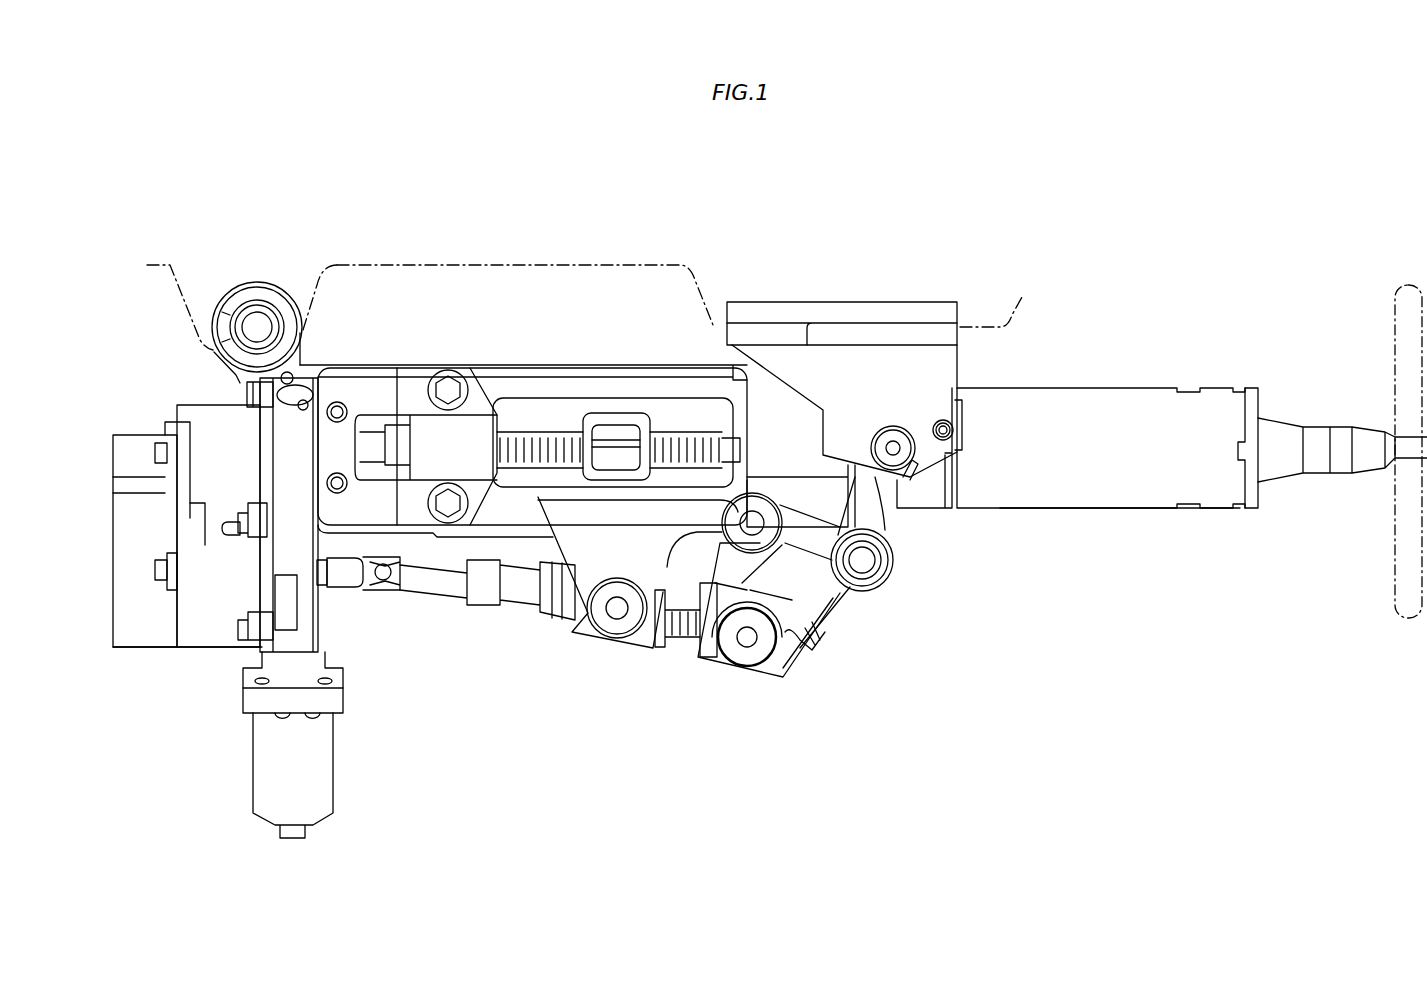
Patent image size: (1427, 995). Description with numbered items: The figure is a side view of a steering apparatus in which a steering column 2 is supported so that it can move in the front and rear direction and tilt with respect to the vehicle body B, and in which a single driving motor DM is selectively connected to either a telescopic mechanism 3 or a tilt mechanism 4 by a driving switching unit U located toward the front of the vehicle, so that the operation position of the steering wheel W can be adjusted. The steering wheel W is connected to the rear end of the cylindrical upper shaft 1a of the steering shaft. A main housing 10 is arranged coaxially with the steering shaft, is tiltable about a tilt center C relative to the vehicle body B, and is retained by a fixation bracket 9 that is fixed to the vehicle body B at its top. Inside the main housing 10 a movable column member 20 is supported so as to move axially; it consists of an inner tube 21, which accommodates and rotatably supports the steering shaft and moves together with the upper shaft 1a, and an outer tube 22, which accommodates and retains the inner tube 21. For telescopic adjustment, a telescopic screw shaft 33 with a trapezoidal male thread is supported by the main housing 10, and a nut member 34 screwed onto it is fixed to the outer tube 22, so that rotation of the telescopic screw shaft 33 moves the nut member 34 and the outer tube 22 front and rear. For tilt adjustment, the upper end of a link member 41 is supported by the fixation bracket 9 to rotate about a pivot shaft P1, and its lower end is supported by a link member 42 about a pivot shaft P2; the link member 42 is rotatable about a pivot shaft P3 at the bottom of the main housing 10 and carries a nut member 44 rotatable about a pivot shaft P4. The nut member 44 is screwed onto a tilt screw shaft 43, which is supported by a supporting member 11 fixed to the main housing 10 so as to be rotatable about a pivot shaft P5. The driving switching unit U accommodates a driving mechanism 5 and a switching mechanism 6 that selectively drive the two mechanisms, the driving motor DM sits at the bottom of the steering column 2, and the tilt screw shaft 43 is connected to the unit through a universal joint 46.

The upper shaft 1a is at (1283, 478).
The steering column 2 is at (1077, 423).
The movable column member 20 is at (1132, 380).
The inner tube 21 is at (1143, 509).
The outer tube 22 is at (935, 508).
The telescopic mechanism 3 is at (547, 420).
The telescopic screw shaft 33 is at (678, 437).
The nut member 34 is at (617, 415).
The tilt mechanism 4 is at (912, 648).
The link member 41 is at (882, 532).
The link member 42 is at (840, 603).
The tilt screw shaft 43 is at (682, 635).
The nut member 44 is at (785, 677).
The universal joint 46 is at (440, 583).
The driving mechanism 5 is at (340, 604).
The switching mechanism 6 is at (213, 635).
The fixation bracket 9 is at (893, 312).
The main housing 10 is at (412, 356).
The supporting member 11 is at (588, 557).
The vehicle body B is at (605, 265).
The tilt center C is at (255, 325).
The driving motor DM is at (327, 770).
The pivot shaft P1 is at (895, 452).
The pivot shaft P2 is at (861, 562).
The pivot shaft P3 is at (757, 525).
The pivot shaft P4 is at (747, 637).
The pivot shaft P5 is at (616, 610).
The driving switching unit U is at (145, 658).
The steering wheel W is at (1412, 285).